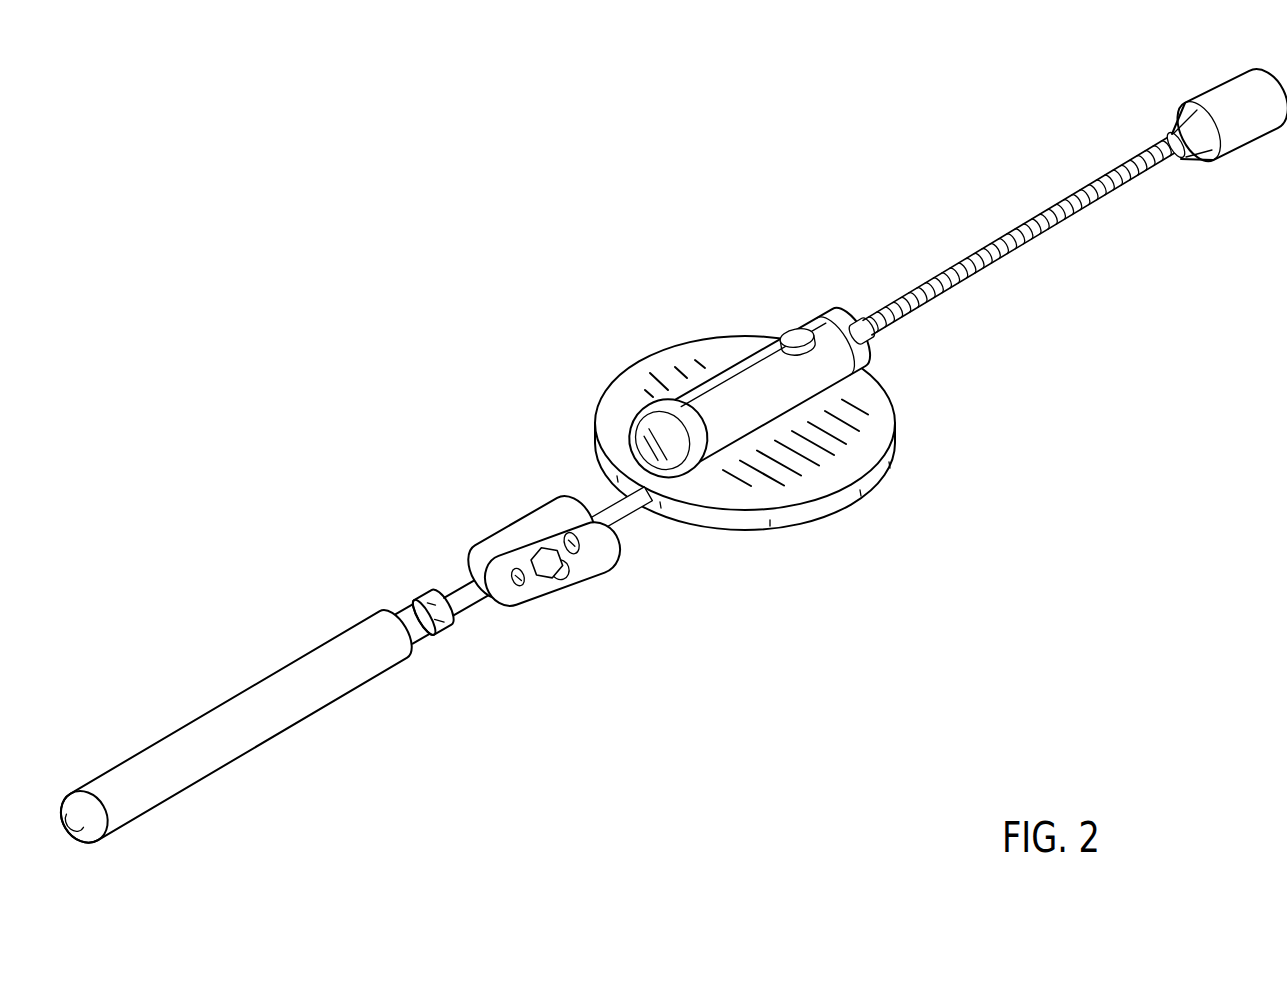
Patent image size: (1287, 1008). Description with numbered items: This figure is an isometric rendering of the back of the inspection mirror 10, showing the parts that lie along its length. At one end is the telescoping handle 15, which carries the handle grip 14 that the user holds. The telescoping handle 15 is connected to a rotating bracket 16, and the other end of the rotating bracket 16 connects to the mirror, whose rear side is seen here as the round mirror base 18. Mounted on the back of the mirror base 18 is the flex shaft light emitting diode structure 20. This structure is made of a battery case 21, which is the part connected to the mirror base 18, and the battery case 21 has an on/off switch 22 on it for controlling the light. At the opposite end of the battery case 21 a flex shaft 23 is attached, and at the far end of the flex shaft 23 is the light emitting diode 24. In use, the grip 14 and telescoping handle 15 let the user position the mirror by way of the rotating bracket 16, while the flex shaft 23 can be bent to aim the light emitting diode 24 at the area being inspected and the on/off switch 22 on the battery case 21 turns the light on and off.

The inspection mirror 10 is at (310, 360).
The handle grip 14 is at (243, 703).
The telescoping handle 15 is at (430, 597).
The rotating bracket 16 is at (513, 523).
The mirror base 18 is at (868, 428).
The flex shaft light emitting diode structure 20 is at (927, 202).
The battery case 21 is at (640, 427).
The on/off switch 22 is at (793, 332).
The flex shaft 23 is at (1010, 243).
The light emitting diode 24 is at (1217, 100).